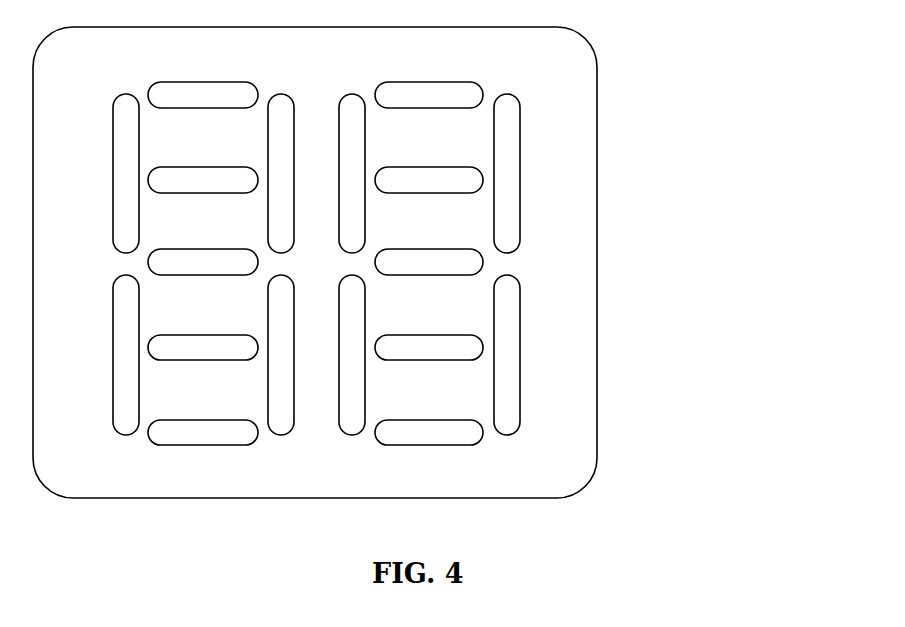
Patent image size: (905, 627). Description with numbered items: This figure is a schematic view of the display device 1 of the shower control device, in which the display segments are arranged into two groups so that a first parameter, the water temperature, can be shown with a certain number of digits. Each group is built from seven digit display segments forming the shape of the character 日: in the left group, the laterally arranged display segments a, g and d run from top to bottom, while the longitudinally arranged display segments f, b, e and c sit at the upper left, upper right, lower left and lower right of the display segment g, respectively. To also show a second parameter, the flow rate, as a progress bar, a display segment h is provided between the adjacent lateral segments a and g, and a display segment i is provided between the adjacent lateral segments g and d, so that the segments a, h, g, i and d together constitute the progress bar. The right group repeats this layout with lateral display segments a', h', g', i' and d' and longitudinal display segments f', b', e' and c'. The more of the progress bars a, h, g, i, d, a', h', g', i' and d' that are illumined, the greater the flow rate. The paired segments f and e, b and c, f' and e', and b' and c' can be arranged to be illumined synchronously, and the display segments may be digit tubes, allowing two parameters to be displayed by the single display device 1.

The display device 1 is at (655, 58).
The display segment a is at (203, 79).
The display segment b is at (294, 173).
The display segment c is at (294, 355).
The display segment d is at (203, 411).
The display segment e is at (107, 355).
The display segment f is at (106, 173).
The display segment g is at (203, 244).
The display segment h is at (203, 160).
The display segment i is at (203, 327).
The display segment a' is at (429, 73).
The display segment b' is at (532, 173).
The display segment c' is at (536, 355).
The display segment d' is at (429, 411).
The display segment e' is at (344, 375).
The display segment f' is at (352, 154).
The display segment g' is at (429, 236).
The display segment h' is at (429, 156).
The display segment i' is at (429, 324).